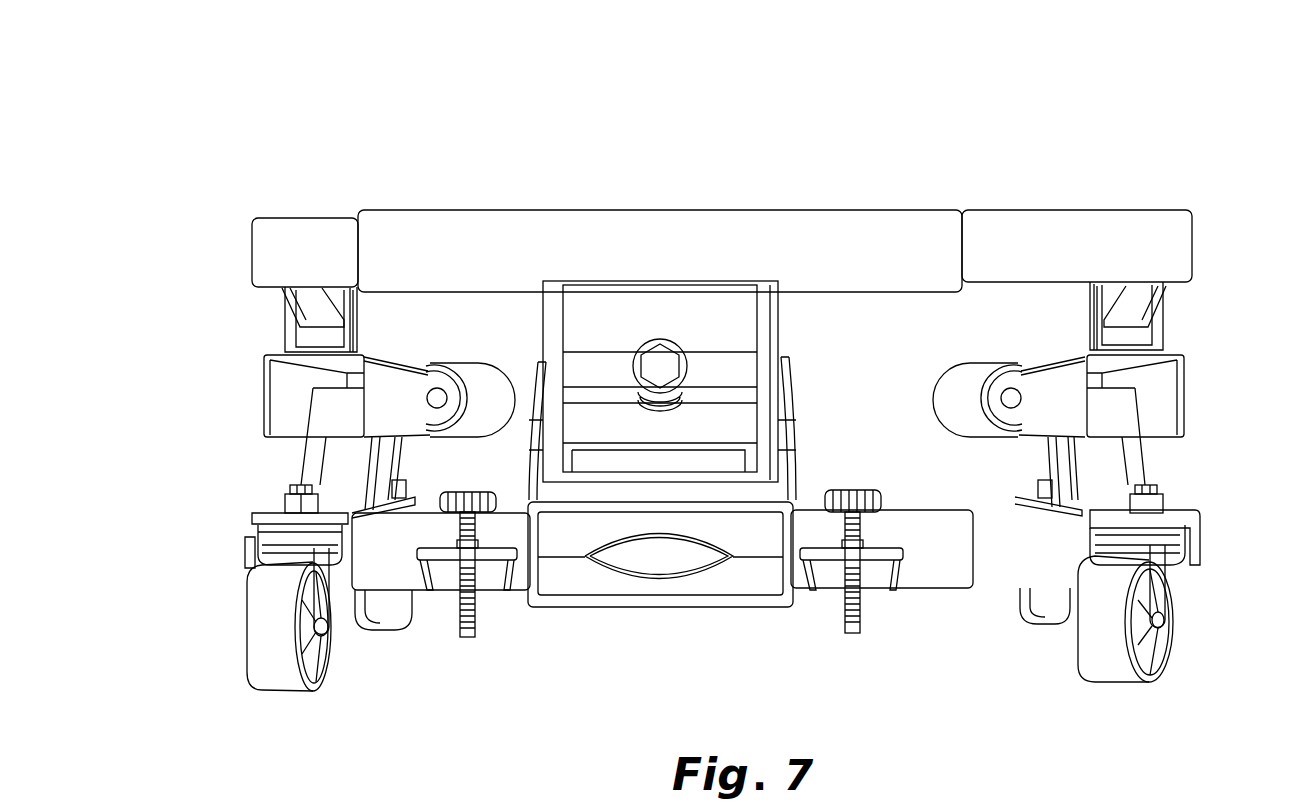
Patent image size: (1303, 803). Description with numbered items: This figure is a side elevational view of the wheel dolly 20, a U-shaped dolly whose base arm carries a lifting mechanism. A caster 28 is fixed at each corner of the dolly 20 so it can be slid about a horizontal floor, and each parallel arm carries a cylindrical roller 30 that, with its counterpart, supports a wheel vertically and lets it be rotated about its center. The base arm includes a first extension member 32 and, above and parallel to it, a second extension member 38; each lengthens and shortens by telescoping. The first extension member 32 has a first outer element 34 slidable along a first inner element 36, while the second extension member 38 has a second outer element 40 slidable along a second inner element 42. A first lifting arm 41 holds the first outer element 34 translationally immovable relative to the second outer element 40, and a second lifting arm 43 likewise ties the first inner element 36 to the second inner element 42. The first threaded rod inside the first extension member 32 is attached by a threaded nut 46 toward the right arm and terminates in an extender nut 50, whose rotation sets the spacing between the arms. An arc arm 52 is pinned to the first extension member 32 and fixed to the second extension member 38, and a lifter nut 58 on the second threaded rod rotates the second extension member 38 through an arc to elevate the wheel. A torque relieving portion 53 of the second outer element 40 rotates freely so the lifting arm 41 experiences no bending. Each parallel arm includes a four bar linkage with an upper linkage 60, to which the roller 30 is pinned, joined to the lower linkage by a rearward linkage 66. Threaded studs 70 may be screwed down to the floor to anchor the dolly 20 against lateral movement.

The wheel dolly 20 is at (728, 128).
The caster 28 is at (265, 665).
The cylindrical roller 30 is at (481, 378).
The first extension member 32 is at (820, 492).
The first outer element 34 is at (440, 578).
The first inner element 36 is at (995, 572).
The second extension member 38 is at (843, 183).
The second outer element 40 is at (468, 242).
The first lifting arm 41 is at (305, 297).
The second inner element 42 is at (1028, 240).
The second lifting arm 43 is at (1140, 288).
The threaded nut 46 is at (1198, 540).
The extender nut 50 is at (245, 548).
The arc arm 52 is at (560, 328).
The torque relieving portion 53 is at (303, 230).
The lifter nut 58 is at (660, 360).
The upper linkage 60 is at (283, 392).
The rearward linkage 66 is at (326, 453).
The threaded stud 70 is at (475, 612).